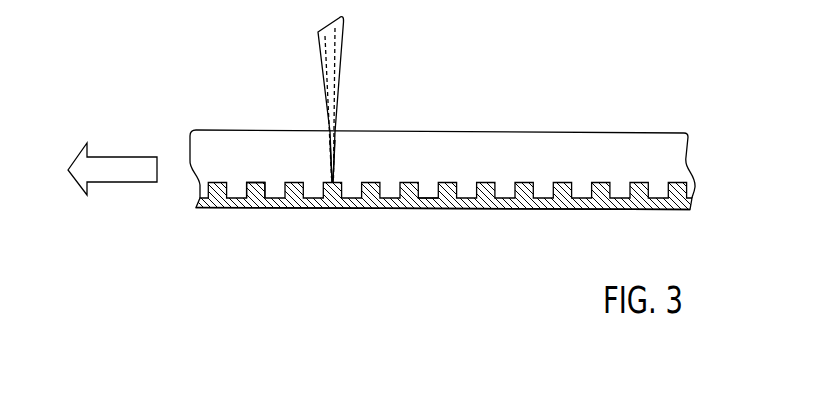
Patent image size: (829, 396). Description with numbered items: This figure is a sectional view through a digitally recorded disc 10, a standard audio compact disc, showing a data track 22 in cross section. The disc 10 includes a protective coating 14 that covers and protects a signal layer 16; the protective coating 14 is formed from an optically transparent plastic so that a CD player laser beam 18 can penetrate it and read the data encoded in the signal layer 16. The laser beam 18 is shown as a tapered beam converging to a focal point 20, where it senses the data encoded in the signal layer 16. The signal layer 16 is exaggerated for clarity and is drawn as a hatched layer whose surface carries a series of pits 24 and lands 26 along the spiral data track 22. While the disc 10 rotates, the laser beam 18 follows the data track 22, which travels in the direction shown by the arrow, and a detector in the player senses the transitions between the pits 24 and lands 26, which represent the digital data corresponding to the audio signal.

The digitally recorded disc 10 is at (559, 281).
The protective coating 14 is at (575, 133).
The signal layer 16 is at (693, 205).
The CD player laser beam 18 is at (332, 68).
The focal point 20 is at (327, 182).
The spiral data track 22 is at (690, 210).
The pits 24 is at (427, 198).
The lands 26 is at (252, 182).